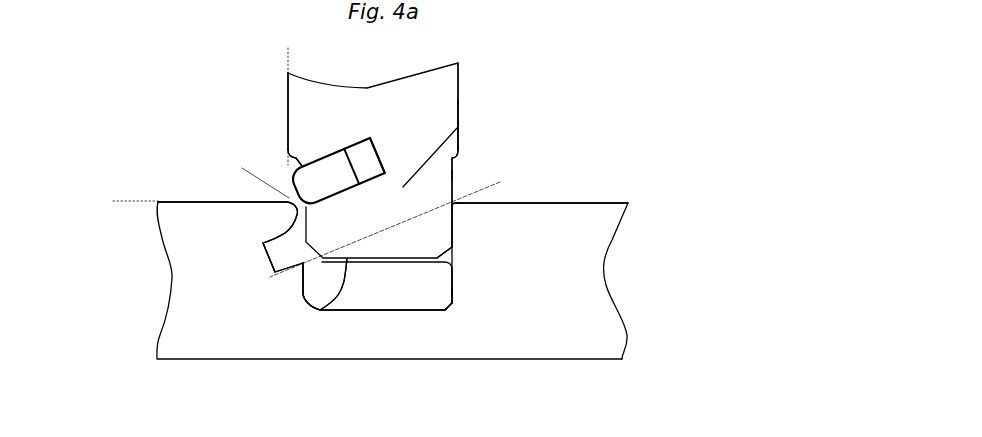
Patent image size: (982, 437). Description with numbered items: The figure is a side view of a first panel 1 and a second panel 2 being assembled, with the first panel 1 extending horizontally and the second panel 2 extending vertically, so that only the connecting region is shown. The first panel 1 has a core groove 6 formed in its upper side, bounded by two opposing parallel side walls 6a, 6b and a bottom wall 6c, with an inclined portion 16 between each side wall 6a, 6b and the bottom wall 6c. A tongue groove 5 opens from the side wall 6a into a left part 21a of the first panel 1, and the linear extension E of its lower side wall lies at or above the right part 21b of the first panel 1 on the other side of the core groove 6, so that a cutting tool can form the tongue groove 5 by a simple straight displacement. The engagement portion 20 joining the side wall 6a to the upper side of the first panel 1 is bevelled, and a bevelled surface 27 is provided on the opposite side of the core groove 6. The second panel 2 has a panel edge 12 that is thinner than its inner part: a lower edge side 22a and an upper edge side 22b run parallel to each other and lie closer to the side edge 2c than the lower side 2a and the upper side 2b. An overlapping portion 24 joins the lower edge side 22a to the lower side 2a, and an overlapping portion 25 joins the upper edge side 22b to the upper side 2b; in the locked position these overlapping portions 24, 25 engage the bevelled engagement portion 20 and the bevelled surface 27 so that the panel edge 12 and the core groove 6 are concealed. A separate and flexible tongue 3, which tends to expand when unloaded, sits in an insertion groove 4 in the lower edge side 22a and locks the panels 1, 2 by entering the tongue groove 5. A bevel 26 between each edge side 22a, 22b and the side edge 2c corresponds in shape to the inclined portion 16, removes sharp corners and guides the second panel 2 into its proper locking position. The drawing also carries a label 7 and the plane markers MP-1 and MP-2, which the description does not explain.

The first panel 1 is at (181, 266).
The second panel 2 is at (413, 87).
The lower side 2a is at (288, 97).
The upper side 2b is at (460, 83).
The side edge 2c is at (306, 300).
The separate and flexible tongue 3 is at (338, 177).
The insertion groove 4 is at (376, 153).
The tongue groove 5 is at (275, 262).
The core groove 6 is at (380, 295).
The side wall 6a is at (300, 298).
The side wall 6b is at (452, 287).
The bottom wall 6c is at (347, 312).
The second mold block 7 is at (585, 258).
The panel edge 12 is at (460, 130).
The inclined portion 16 is at (452, 303).
The engagement portion 20 is at (288, 214).
The left part 21a is at (183, 218).
The right part 21b is at (552, 225).
The lower edge side 22a is at (262, 243).
The upper edge side 22b is at (453, 187).
The overlapping portion 24 is at (300, 161).
The overlapping portion 25 is at (458, 158).
The bevel 26 is at (452, 258).
The bevelled surface 27 is at (457, 205).
The linear extension E is at (395, 222).
The mold parting plane 1 MP-1 is at (105, 203).
The mold parting plane 2 MP-2 is at (288, 96).